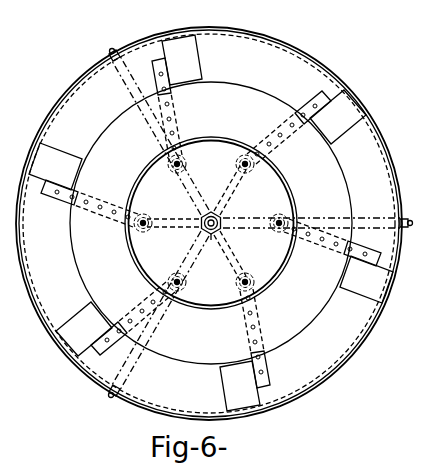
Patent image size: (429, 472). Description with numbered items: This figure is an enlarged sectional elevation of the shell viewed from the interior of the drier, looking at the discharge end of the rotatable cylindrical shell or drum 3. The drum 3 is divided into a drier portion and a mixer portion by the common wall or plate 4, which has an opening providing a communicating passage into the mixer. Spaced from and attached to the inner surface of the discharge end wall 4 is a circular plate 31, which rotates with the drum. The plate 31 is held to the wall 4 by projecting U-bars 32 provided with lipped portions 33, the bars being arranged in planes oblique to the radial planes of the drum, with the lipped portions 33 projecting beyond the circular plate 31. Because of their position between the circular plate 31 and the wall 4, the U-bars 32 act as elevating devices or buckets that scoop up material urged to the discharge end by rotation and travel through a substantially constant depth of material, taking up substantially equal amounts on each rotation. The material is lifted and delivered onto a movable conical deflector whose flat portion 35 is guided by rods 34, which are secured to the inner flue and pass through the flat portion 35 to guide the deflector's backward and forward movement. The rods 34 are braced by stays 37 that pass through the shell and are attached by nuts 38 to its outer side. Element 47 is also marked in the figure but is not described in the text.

The cylindrical shell or drum 3 is at (386, 147).
The wall or plate 4 is at (209, 223).
The circular plate 31 is at (211, 223).
The U-bars 32 is at (103, 340).
The lipped portions 33 is at (211, 223).
The guide rods 34 is at (144, 219).
The flat portion 35 is at (280, 197).
The stays 37 is at (136, 96).
The nuts 38 is at (116, 46).
The hub pin 47 is at (137, 267).